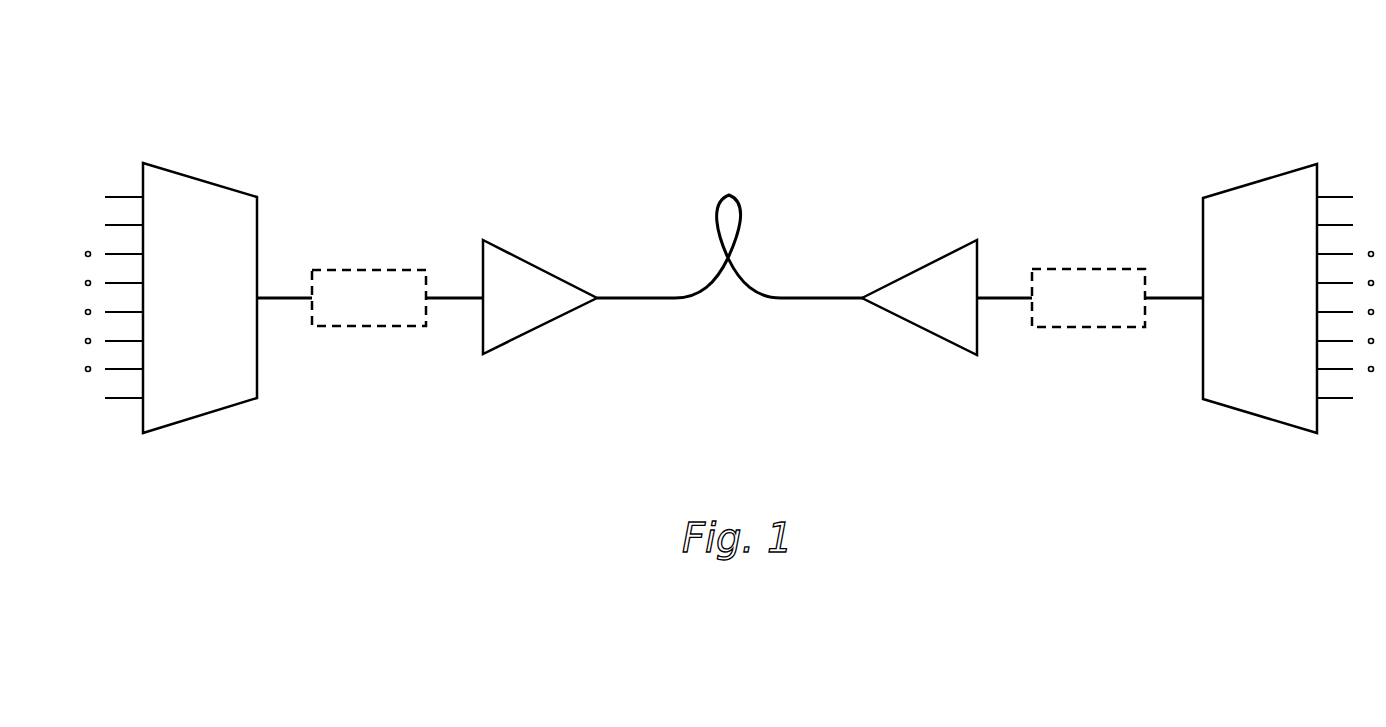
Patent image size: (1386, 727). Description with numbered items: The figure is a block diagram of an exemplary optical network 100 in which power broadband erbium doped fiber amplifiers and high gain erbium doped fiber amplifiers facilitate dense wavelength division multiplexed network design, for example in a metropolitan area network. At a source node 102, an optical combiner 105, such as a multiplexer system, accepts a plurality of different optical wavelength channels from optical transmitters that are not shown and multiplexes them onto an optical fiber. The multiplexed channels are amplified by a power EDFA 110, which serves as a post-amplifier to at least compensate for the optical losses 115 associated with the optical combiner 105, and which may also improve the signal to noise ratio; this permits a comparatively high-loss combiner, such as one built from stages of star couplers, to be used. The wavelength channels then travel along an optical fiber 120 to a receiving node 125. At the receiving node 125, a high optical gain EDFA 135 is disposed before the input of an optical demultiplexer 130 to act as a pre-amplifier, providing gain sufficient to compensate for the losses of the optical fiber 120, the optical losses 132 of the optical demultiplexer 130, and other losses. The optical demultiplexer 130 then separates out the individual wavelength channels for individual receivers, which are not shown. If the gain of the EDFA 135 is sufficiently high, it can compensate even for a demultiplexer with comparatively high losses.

The optical network 100 is at (775, 93).
The source node 102 is at (372, 397).
The optical combiner 105 is at (218, 309).
The power EDFA 110 is at (543, 309).
The optical losses 115 is at (387, 309).
The optical fiber 120 is at (633, 299).
The receiving node 125 is at (1140, 397).
The optical demultiplexer 130 is at (1278, 309).
The optical losses 132 is at (1106, 309).
The high optical gain EDFA 135 is at (947, 309).